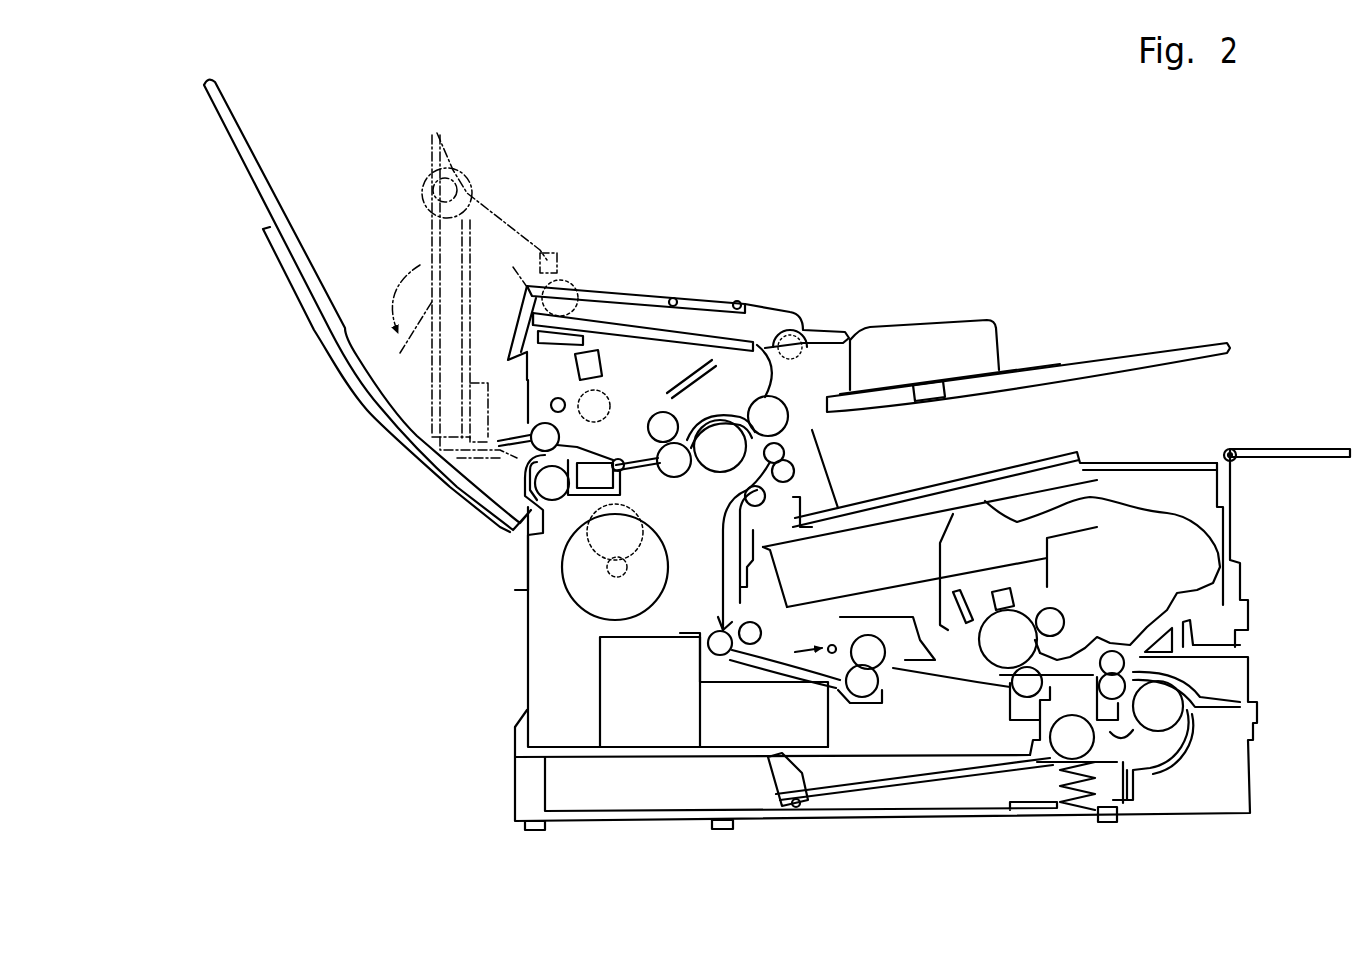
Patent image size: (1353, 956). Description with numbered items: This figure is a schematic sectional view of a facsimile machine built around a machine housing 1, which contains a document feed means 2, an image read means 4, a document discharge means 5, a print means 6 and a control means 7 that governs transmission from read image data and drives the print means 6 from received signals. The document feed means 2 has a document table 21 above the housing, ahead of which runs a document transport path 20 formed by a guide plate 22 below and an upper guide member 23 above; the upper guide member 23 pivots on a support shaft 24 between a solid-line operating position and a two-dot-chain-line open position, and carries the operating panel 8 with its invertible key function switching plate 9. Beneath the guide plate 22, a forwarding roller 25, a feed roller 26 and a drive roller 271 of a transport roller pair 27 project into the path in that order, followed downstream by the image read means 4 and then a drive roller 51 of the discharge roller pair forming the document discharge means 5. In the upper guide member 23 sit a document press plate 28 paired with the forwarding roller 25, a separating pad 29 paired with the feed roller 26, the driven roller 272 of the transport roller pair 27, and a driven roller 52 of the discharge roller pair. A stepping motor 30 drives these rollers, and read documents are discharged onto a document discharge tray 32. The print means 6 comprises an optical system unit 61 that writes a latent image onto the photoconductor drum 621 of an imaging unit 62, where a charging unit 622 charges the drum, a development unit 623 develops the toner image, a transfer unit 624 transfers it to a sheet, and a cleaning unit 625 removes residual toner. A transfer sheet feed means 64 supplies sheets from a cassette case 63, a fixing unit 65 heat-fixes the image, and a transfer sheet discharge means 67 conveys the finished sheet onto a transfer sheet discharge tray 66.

The machine housing 1 is at (522, 684).
The document feed means 2 is at (646, 487).
The image read means 4 is at (593, 478).
The document discharge means 5 is at (526, 463).
The print means 6 is at (1204, 630).
The control means 7 is at (622, 705).
The operating panel 8 is at (616, 288).
The key function switching plate 9 is at (710, 336).
The document transport path 20 is at (627, 386).
The document table 21 is at (1025, 372).
The guide plate 22 is at (803, 390).
The upper guide member 23 is at (600, 354).
The support shaft 24 is at (558, 398).
The forwarding roller 25 is at (790, 398).
The feed roller 26 is at (718, 456).
The transport roller pair 27 is at (682, 487).
The document press plate 28 is at (762, 390).
The separating pad 29 is at (672, 385).
The stepping motor 30 is at (596, 604).
The document discharge tray 32 is at (270, 186).
The drive roller 51 is at (550, 486).
The driven roller 52 is at (533, 433).
The optical system unit 61 is at (903, 530).
The imaging unit 62 is at (1148, 502).
The cassette case 63 is at (834, 803).
The transfer sheet feed means 64 is at (1186, 756).
The fixing unit 65 is at (866, 700).
The transfer sheet discharge tray 66 is at (1025, 466).
The transfer sheet discharge means 67 is at (721, 573).
The drive roller 271 is at (660, 483).
The driven roller 272 is at (662, 418).
The photoconductor drum 621 is at (1021, 624).
The charging unit 622 is at (1014, 597).
The development unit 623 is at (1062, 620).
The transfer unit 624 is at (1017, 691).
The cleaning unit 625 is at (958, 614).